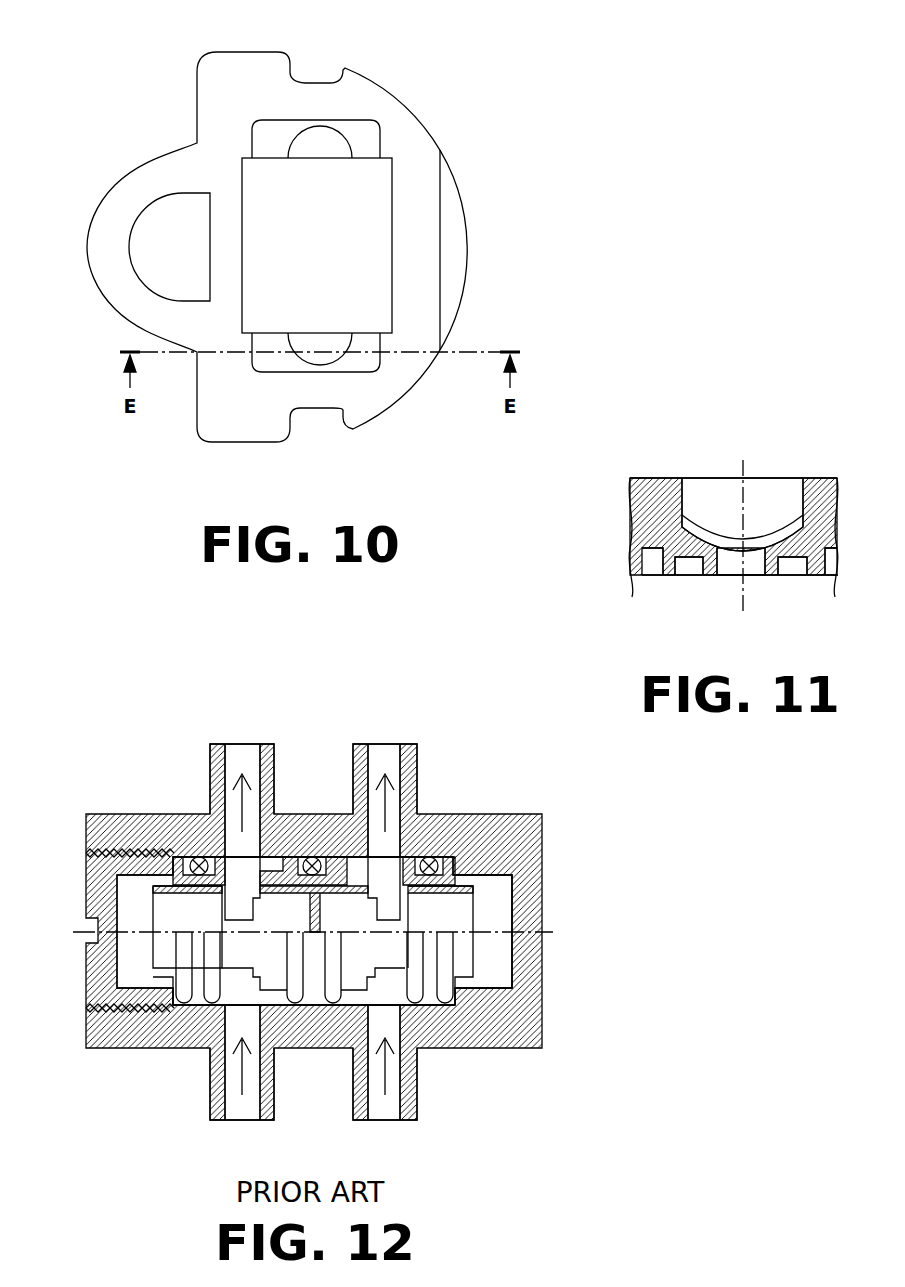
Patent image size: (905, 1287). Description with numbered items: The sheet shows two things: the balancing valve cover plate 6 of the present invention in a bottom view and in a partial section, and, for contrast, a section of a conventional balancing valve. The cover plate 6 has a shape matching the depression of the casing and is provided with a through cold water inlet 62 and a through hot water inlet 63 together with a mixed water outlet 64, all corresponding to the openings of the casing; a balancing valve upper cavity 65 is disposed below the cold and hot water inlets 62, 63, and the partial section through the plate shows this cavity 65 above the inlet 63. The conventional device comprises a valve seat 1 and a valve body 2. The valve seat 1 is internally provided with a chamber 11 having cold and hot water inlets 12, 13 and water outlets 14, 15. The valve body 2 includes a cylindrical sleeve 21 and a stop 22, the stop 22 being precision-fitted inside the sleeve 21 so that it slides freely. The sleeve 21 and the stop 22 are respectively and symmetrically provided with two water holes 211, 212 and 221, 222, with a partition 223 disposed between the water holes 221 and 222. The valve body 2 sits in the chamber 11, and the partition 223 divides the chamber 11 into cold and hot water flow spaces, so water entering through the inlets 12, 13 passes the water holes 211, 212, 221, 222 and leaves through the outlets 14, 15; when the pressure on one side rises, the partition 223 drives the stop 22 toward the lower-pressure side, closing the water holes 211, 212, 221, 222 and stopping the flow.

In FIG. 10, the balancing valve cover plate 6 is at (478, 268).
In FIG. 10, the cold water inlet 62 is at (323, 146).
In FIG. 10, the hot water inlet 63 is at (328, 345).
In FIG. 11, the hot water inlet 63 is at (733, 566).
In FIG. 10, the mixed water outlet 64 is at (165, 243).
In FIG. 10, the balancing valve upper cavity 65 is at (370, 237).
In FIG. 11, the balancing valve upper cavity 65 is at (763, 500).
In FIG. 12, the valve seat 1 is at (510, 802).
In FIG. 12, the valve body 2 is at (316, 937).
In FIG. 12, the chamber 11 is at (137, 957).
In FIG. 12, the cold water inlet 12 is at (242, 1026).
In FIG. 12, the hot water inlet 13 is at (387, 1025).
In FIG. 12, the water outlet 14 is at (243, 752).
In FIG. 12, the water outlet 15 is at (386, 752).
In FIG. 12, the cylindrical sleeve 21 is at (293, 862).
In FIG. 12, the stop 22 is at (458, 912).
In FIG. 12, the water hole 211 is at (245, 897).
In FIG. 12, the water hole 212 is at (387, 895).
In FIG. 12, the water hole 221 is at (215, 923).
In FIG. 12, the water hole 222 is at (400, 912).
In FIG. 12, the partition 223 is at (307, 910).